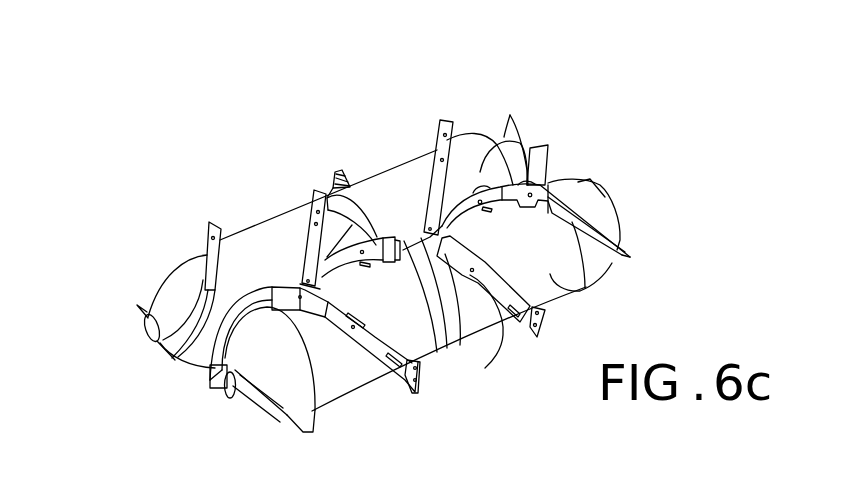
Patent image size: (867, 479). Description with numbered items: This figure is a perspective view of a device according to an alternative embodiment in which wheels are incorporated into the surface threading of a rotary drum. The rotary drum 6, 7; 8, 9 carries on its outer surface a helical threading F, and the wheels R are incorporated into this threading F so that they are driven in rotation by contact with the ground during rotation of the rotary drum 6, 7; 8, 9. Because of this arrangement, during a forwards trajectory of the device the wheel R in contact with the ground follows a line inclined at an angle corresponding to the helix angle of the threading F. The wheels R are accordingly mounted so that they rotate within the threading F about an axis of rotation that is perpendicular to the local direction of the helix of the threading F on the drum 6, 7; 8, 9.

The rotary drum 6 is at (273, 232).
The rotary drum 7 is at (345, 377).
The rotary drum 8 is at (400, 178).
The rotary drum 9 is at (588, 290).
The wheel R is at (514, 134).
The threading F is at (420, 360).